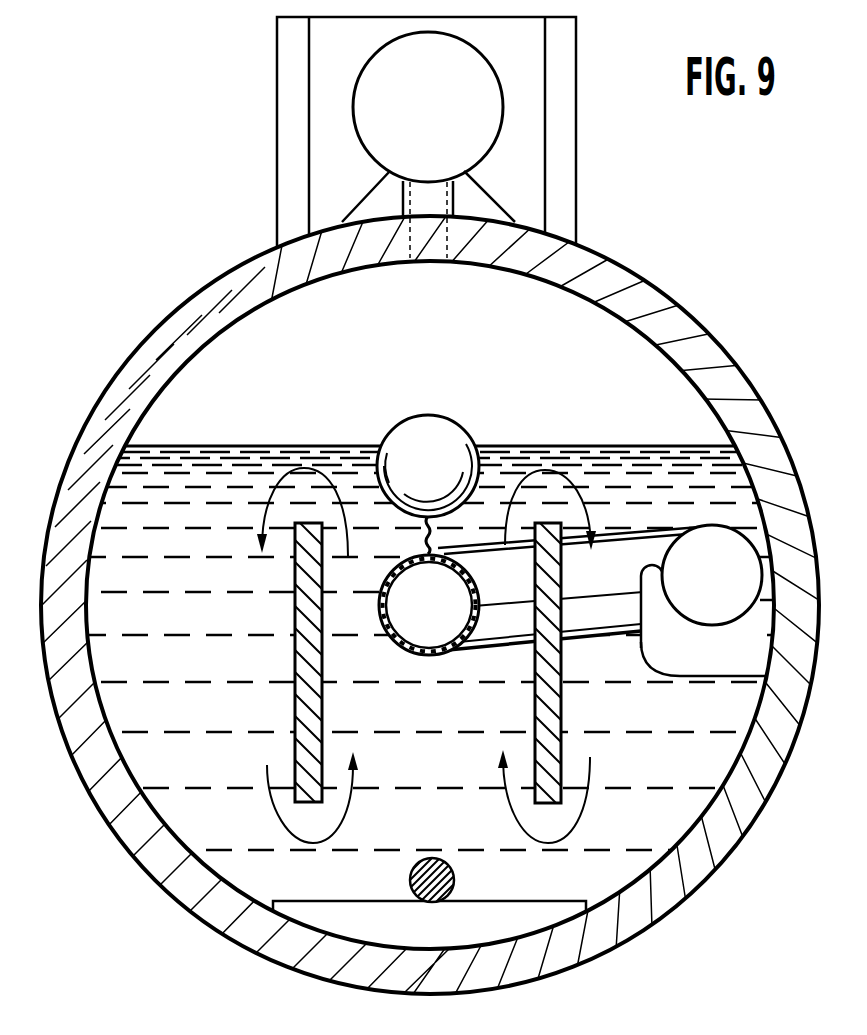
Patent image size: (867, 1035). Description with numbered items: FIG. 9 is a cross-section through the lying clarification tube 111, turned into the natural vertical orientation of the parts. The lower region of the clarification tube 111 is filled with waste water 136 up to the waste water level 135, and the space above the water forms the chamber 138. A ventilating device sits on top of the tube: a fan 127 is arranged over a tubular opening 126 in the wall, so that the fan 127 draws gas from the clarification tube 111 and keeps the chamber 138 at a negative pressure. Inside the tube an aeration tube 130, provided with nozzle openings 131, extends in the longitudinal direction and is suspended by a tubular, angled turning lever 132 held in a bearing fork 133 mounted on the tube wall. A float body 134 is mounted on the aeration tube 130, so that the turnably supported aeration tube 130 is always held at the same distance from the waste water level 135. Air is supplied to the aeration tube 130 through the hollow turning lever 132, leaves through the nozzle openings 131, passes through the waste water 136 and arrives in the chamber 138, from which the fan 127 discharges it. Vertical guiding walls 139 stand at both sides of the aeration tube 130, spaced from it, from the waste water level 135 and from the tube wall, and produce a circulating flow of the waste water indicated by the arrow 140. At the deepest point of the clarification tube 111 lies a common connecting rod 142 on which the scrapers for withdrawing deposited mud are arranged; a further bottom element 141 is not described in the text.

The clarification tube 111 is at (427, 604).
The tubular opening 126 is at (430, 243).
The fan 127 is at (369, 107).
The aeration tube 130 is at (440, 626).
The nozzle openings 131 is at (397, 640).
The turning lever 132 is at (628, 555).
The bearing fork 133 is at (734, 660).
The float body 134 is at (430, 416).
The waste water level 135 is at (217, 443).
The waste water 136 is at (143, 766).
The chamber 138 is at (225, 355).
The guiding walls 139 is at (296, 694).
The arrow 140 is at (333, 462).
The bottom support block 141 is at (530, 923).
The connecting rod 142 is at (437, 857).